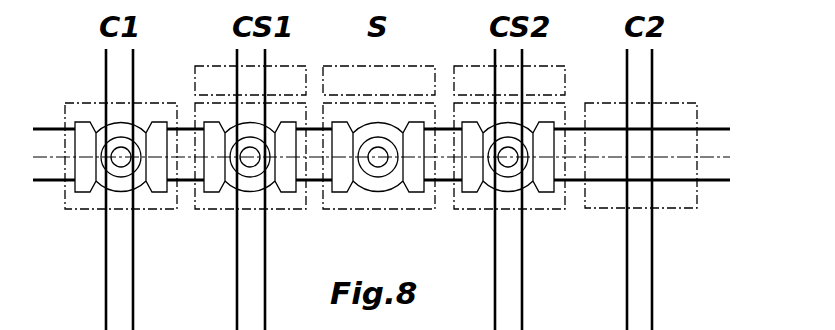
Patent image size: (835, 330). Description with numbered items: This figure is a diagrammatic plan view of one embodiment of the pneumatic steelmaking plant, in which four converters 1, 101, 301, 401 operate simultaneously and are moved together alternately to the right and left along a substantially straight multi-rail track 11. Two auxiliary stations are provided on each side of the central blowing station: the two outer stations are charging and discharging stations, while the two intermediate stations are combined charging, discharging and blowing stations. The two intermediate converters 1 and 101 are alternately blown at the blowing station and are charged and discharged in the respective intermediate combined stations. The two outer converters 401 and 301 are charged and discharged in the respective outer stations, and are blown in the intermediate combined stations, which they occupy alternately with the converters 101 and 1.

The converter 1 is at (387, 180).
The converter 101 is at (287, 179).
The converter 301 is at (547, 181).
The converter 401 is at (157, 179).
The multi-rail track 11 is at (703, 131).